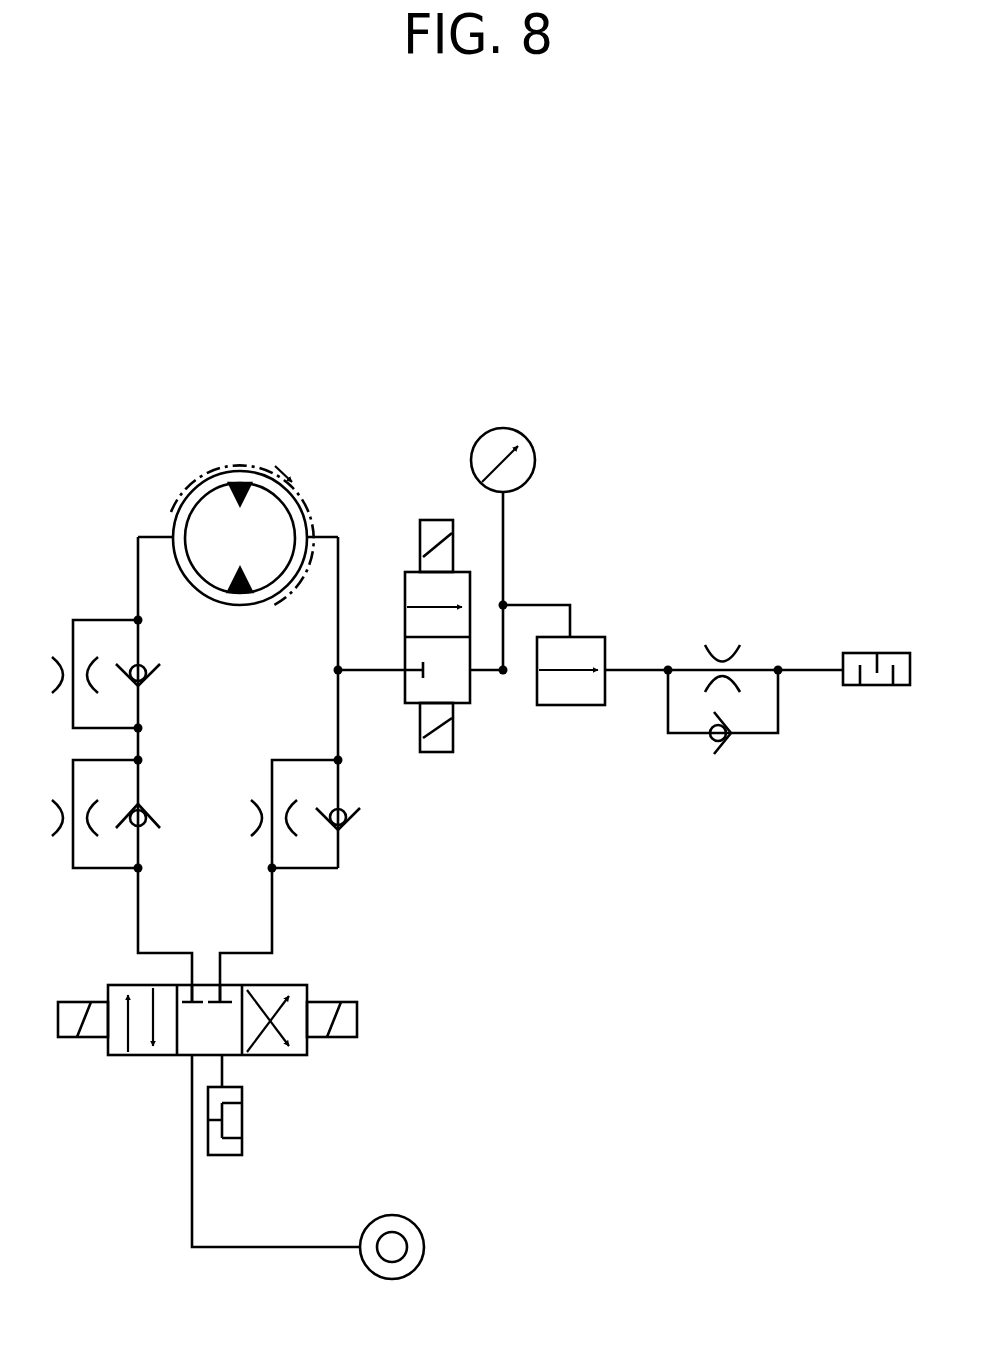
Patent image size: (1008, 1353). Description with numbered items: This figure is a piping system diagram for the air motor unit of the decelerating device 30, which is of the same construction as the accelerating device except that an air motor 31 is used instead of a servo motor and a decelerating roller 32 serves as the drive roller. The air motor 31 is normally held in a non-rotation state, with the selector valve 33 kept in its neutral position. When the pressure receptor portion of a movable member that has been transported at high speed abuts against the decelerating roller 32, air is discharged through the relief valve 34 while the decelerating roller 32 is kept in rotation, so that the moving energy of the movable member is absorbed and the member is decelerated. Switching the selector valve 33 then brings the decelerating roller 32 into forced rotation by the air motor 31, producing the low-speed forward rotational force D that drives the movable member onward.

The decelerating device 30 is at (108, 572).
The air motor 31 is at (253, 557).
The decelerating roller 32 is at (173, 523).
The selector valve 33 is at (150, 1057).
The relief valve 34 is at (557, 707).
The low-speed forward rotational force D is at (247, 462).